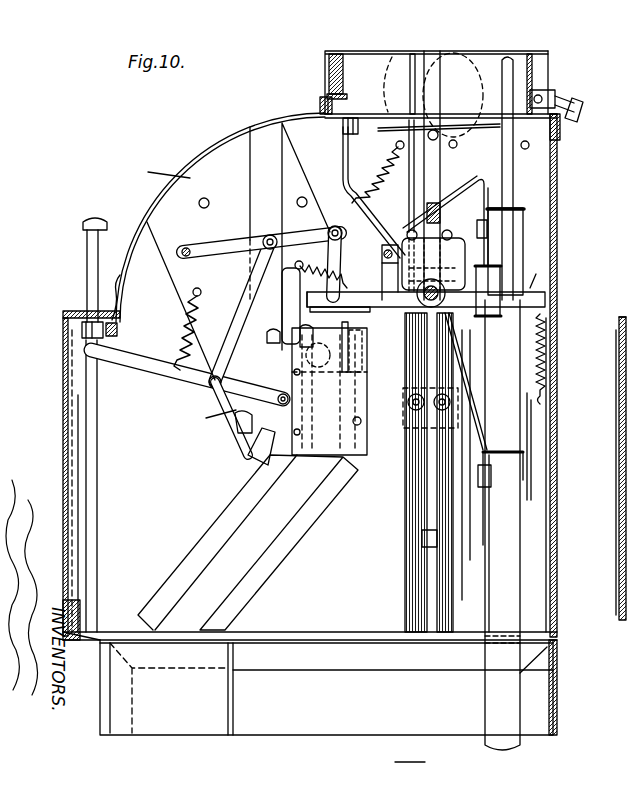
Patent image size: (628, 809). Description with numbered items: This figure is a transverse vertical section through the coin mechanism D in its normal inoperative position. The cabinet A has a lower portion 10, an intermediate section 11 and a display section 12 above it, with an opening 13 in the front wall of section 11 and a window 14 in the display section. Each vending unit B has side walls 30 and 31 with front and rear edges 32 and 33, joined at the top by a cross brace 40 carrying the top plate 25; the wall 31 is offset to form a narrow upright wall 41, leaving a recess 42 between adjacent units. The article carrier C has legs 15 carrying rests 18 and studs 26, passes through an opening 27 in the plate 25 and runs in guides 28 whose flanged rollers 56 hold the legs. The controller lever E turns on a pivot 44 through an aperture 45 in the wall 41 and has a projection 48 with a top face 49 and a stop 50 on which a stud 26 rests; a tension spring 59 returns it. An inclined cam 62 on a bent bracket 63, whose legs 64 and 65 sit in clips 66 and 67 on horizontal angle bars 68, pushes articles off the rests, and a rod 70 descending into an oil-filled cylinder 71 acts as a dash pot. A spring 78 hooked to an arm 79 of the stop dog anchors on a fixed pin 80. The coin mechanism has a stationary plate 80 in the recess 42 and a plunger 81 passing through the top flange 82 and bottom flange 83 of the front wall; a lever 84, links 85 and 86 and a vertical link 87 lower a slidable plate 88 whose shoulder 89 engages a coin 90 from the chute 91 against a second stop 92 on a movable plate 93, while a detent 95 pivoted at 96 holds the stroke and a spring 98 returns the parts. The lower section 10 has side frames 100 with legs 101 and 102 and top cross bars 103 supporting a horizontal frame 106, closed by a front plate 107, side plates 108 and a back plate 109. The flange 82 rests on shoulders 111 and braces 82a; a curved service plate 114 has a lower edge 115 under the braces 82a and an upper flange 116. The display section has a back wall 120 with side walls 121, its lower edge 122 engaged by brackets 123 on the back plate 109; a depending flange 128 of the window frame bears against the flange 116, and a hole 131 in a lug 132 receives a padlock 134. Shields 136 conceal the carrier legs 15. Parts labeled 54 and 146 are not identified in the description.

The lower chamber or portion 10 is at (450, 708).
The intermediate portion 11 is at (66, 350).
The display section 12 is at (408, 30).
The opening 13 is at (68, 436).
The window or transparent member 14 is at (335, 65).
The legs or side pieces 15 is at (424, 505).
The rests 18 is at (446, 122).
The top plate 25 is at (332, 126).
The supporting stud or projection 26 is at (438, 134).
The openings 27 is at (397, 84).
The carrier guides 28 is at (413, 450).
The side wall 30 is at (462, 458).
The side plate 31 is at (248, 542).
The front edge 32 is at (618, 294).
The rear edge 33 is at (547, 524).
The cross brace or bar 40 is at (355, 117).
The narrow upright wall 41 is at (405, 557).
The recess or pocket 42 is at (290, 640).
The pivot 44 is at (444, 302).
The aperture 45 is at (407, 192).
The upwardly extending projection 48 is at (516, 270).
The top face or edge 49 is at (477, 232).
The shoulder or stop 50 is at (433, 265).
The link rod 54 is at (452, 332).
The flanged guide rollers 56 is at (450, 405).
The tension spring 59 is at (546, 353).
The inclined cam 62 is at (474, 165).
The bent bar or bracket 63 is at (490, 183).
The upper leg 64 is at (488, 192).
The lower leg 65 is at (490, 512).
The clip or socket 66 is at (512, 243).
The clip or socket 67 is at (492, 480).
The horizontal angle bars 68 is at (524, 209).
The rod 70 is at (509, 60).
The vertical cylinder or tube 71 is at (502, 525).
The tension spring 78 is at (366, 148).
The arm or extension 79 is at (370, 206).
The plate 80 is at (262, 462).
The push rod or plunger 81 is at (87, 250).
The top flange 82 is at (66, 313).
The cross bars or braces 82a is at (108, 300).
The bottom flange 83 is at (86, 620).
The lever 84 is at (151, 370).
The link 85 is at (250, 276).
The link 86 is at (225, 226).
The vertical link 87 is at (343, 238).
The vertically slidable plate 88 is at (407, 292).
The stop or shoulder 89 is at (348, 345).
The coin or token 90 is at (350, 360).
The coin chute 91 is at (238, 251).
The second stop 92 is at (306, 358).
The movable plate 93 is at (300, 330).
The detent 95 is at (398, 258).
The pivot 96 is at (356, 420).
The tension coil spring 98 is at (191, 300).
The side frame members 100 is at (100, 700).
The front leg 101 is at (142, 732).
The rear leg 102 is at (538, 691).
The top cross bar 103 is at (393, 662).
The horizontal frame 106 is at (68, 598).
The front plate 107 is at (112, 712).
The side plates 108 is at (434, 719).
The back plate 109 is at (557, 235).
The intermediate shoulders or extensions 111 is at (82, 329).
The service plate or cover 114 is at (222, 143).
The lower edge 115 is at (119, 330).
The flange 116 is at (320, 106).
The upright back wall 120 is at (549, 62).
The side walls 121 is at (436, 82).
The lower edge 122 is at (531, 142).
The brackets 123 is at (561, 140).
The depending flange 128 is at (336, 100).
The hole 131 is at (556, 100).
The lug 132 is at (541, 95).
The padlocks 134 is at (583, 112).
The shields or narrow vertical plates 136 is at (413, 57).
The partition 146 is at (259, 689).